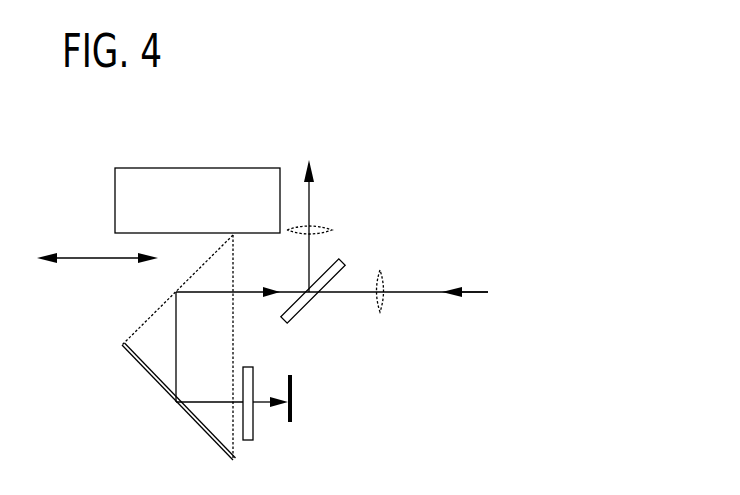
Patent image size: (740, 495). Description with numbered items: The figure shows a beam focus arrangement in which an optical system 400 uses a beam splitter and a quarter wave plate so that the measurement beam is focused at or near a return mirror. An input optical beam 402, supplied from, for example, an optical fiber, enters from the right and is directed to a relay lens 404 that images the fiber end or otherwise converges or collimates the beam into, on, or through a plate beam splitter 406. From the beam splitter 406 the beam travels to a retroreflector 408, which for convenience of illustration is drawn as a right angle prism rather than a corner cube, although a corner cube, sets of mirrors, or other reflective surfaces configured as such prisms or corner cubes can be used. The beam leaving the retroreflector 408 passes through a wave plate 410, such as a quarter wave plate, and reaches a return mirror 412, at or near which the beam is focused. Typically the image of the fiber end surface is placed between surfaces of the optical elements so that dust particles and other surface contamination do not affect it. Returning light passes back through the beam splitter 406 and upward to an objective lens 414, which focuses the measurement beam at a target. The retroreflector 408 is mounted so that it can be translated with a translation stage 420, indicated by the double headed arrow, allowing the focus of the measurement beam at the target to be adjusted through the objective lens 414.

The optical system 400 is at (472, 189).
The input optical beam 402 is at (468, 290).
The relay lens 404 is at (383, 305).
The plate beam splitter 406 is at (340, 262).
The retroreflector 408 is at (143, 370).
The wave plate 410 is at (253, 435).
The return mirror 412 is at (292, 410).
The objective lens 414 is at (311, 228).
The translation stage 420 is at (148, 167).